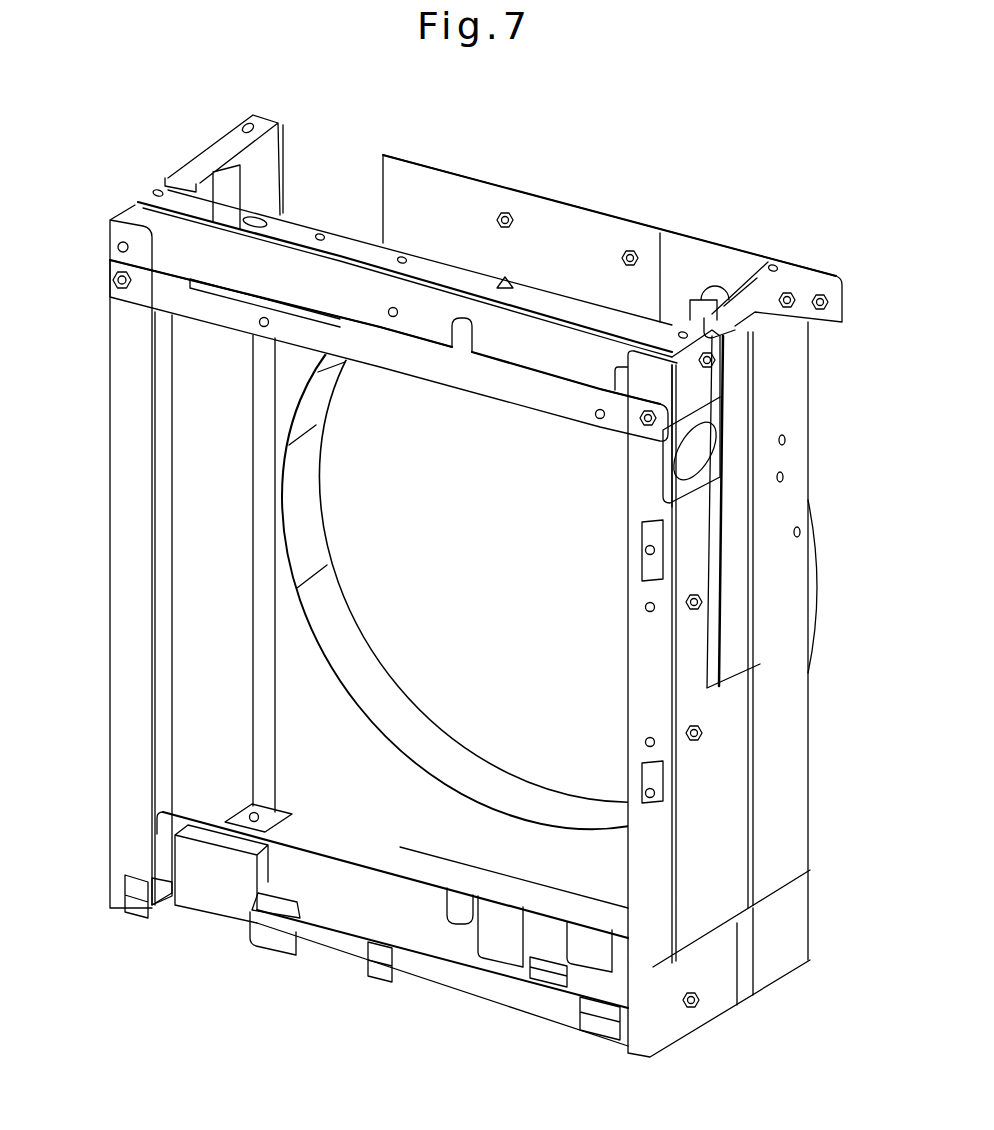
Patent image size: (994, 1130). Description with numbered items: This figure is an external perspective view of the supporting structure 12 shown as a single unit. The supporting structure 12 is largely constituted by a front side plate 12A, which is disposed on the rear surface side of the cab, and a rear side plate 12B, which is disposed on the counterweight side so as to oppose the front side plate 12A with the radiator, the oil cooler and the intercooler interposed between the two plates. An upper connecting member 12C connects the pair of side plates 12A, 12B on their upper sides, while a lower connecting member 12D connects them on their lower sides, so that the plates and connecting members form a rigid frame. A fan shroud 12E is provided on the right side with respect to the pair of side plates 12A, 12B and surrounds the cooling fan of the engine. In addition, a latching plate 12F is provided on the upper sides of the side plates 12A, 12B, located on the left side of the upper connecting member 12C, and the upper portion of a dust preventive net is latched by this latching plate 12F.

The supporting structure 12 is at (484, 174).
The front side plate 12A is at (135, 208).
The rear side plate 12B is at (790, 713).
The upper connecting member 12C is at (340, 235).
The lower connecting member 12D is at (483, 942).
The fan shroud 12E is at (377, 803).
The latching plate 12F is at (243, 323).